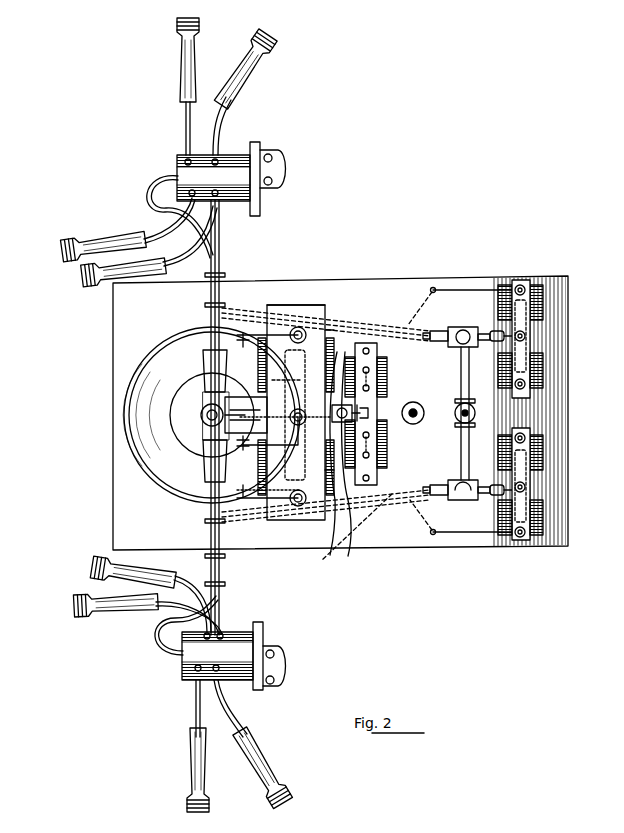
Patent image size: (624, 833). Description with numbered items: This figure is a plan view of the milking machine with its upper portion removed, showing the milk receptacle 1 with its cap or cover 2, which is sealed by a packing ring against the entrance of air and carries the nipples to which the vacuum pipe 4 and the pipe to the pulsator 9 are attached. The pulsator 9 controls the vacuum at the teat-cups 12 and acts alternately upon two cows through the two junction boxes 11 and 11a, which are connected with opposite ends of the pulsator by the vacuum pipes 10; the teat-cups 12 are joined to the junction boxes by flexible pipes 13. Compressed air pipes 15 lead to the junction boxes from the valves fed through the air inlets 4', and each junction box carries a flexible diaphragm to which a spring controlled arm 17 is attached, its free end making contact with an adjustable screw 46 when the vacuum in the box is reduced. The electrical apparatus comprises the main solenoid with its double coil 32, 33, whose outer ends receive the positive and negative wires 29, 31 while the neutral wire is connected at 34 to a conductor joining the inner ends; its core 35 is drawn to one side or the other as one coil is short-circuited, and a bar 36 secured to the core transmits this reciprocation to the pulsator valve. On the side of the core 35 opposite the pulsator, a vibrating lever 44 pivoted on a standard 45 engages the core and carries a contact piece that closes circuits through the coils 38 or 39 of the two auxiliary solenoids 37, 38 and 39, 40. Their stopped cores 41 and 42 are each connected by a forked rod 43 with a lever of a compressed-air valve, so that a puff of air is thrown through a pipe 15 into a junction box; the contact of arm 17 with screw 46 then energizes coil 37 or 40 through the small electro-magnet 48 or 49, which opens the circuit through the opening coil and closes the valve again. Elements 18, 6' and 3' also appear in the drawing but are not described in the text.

The milk receptacle 1 is at (150, 478).
The cap or cover 2 is at (199, 415).
The pulsator 9 is at (205, 395).
The vacuum pipes 10 is at (222, 273).
The junction box 11 is at (178, 157).
The junction box 11a is at (180, 680).
The teat-cups 12 is at (255, 50).
The flexible pipes 13 is at (222, 115).
The compressed air pipes 15 is at (145, 194).
The spring controlled arm 17 is at (265, 164).
The terminal knob 18 is at (417, 404).
The positive wire 29 is at (298, 505).
The negative wire 31 is at (300, 325).
The main solenoid coil 32 is at (336, 340).
The main solenoid coil 33 is at (318, 460).
The neutral wire connection 34 is at (326, 338).
The core 35 is at (272, 378).
The bar 36 is at (282, 425).
The auxiliary solenoid coil 37 is at (548, 296).
The auxiliary solenoid coil 38 is at (548, 370).
The auxiliary solenoid coil 39 is at (548, 436).
The auxiliary solenoid coil 40 is at (548, 520).
The core 41 is at (530, 330).
The core 42 is at (530, 480).
The forked rod 43 is at (500, 345).
The vibrating lever 44 is at (361, 460).
The standard 45 is at (485, 332).
The adjustable screw 46 is at (268, 150).
The electro-magnet 48 is at (427, 344).
The electro-magnet 49 is at (388, 432).
The pipe 4 is at (452, 413).
The compressed air inlet 4' is at (450, 413).
The contact 6' is at (371, 395).
The terminal mark 3' is at (267, 471).